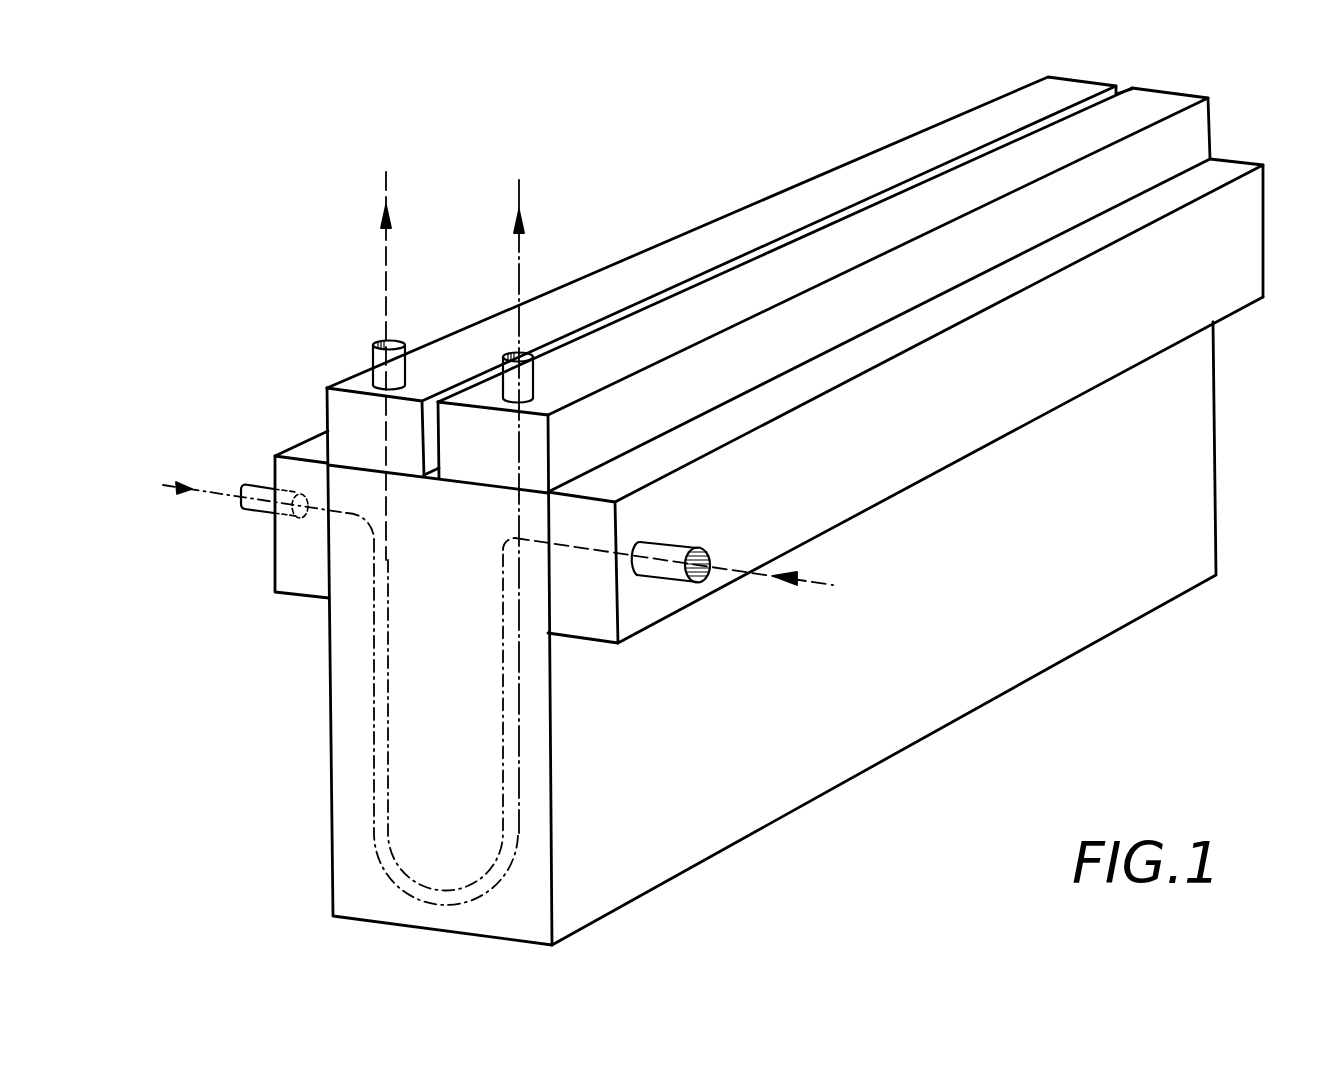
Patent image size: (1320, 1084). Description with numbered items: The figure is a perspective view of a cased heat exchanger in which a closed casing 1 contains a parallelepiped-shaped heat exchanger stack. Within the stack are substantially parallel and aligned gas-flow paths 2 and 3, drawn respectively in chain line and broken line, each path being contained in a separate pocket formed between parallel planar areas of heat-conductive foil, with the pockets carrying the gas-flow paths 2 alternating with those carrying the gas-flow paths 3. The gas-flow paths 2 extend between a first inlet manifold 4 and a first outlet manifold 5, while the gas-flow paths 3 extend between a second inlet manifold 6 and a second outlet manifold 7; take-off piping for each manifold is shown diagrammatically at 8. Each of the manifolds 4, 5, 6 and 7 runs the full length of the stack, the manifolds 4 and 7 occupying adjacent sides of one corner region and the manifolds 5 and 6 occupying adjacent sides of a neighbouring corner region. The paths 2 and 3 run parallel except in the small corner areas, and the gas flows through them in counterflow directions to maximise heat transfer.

The closed casing 1 is at (848, 760).
The gas-flow paths 2 is at (367, 663).
The gas-flow paths 3 is at (388, 767).
The first inlet manifold 4 is at (302, 583).
The first outlet manifold 5 is at (1190, 135).
The second inlet manifold 6 is at (880, 484).
The second outlet manifold 7 is at (340, 409).
The take-off piping 8 is at (372, 346).